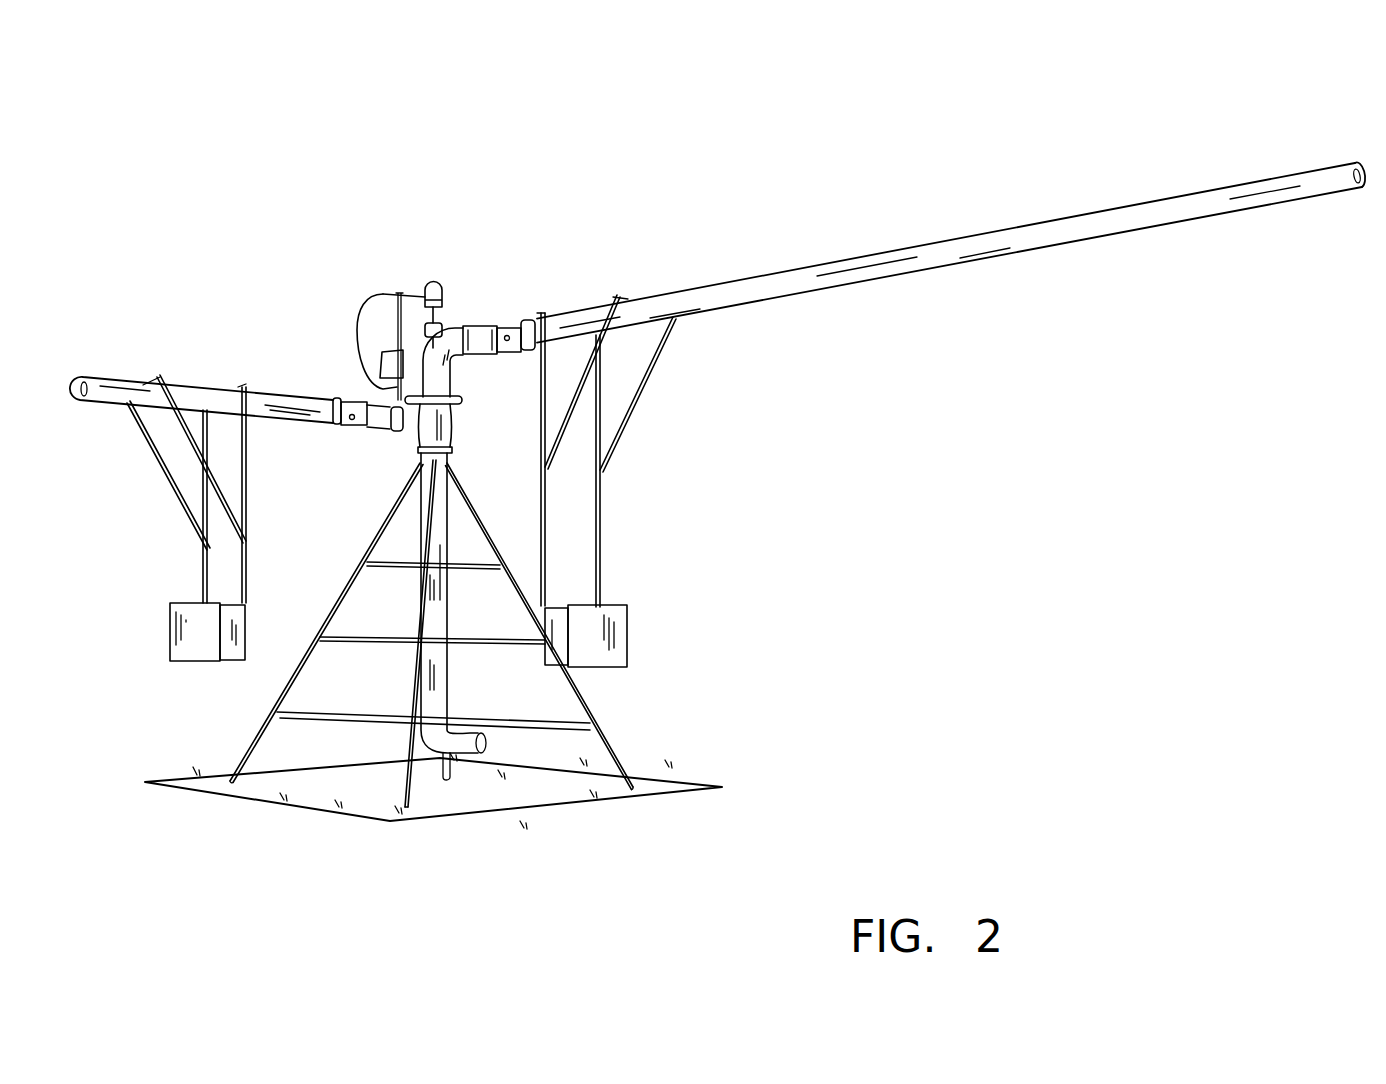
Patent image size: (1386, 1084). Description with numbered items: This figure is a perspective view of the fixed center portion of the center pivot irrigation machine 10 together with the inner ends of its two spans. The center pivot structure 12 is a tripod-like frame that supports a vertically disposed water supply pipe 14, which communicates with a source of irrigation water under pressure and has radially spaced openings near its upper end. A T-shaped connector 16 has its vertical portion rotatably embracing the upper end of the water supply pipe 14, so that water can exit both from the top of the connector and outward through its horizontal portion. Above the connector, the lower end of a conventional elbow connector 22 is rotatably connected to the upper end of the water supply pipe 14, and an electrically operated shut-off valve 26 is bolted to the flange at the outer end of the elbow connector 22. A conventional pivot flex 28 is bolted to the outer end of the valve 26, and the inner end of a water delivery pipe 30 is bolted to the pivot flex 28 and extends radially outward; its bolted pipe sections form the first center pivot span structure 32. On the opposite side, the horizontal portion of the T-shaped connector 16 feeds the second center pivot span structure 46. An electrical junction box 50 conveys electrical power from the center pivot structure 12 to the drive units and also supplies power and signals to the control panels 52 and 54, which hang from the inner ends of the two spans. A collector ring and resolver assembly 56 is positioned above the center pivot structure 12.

The center pivot irrigation machine 10 is at (722, 205).
The center pivot structure 12 is at (622, 725).
The water supply pipe 14 is at (440, 588).
The T-shaped connector 16 is at (457, 430).
The elbow connector 22 is at (458, 380).
The electrically operated shut-off valve 26 is at (472, 318).
The pivot flex 28 is at (505, 325).
The water delivery pipe 30 is at (805, 272).
The first center pivot span structure 32 is at (1032, 215).
The second center pivot span structure 46 is at (238, 370).
The electrical junction box 50 is at (383, 360).
The control panel 52 is at (613, 620).
The control panel 54 is at (197, 640).
The collector ring and resolver assembly 56 is at (440, 265).